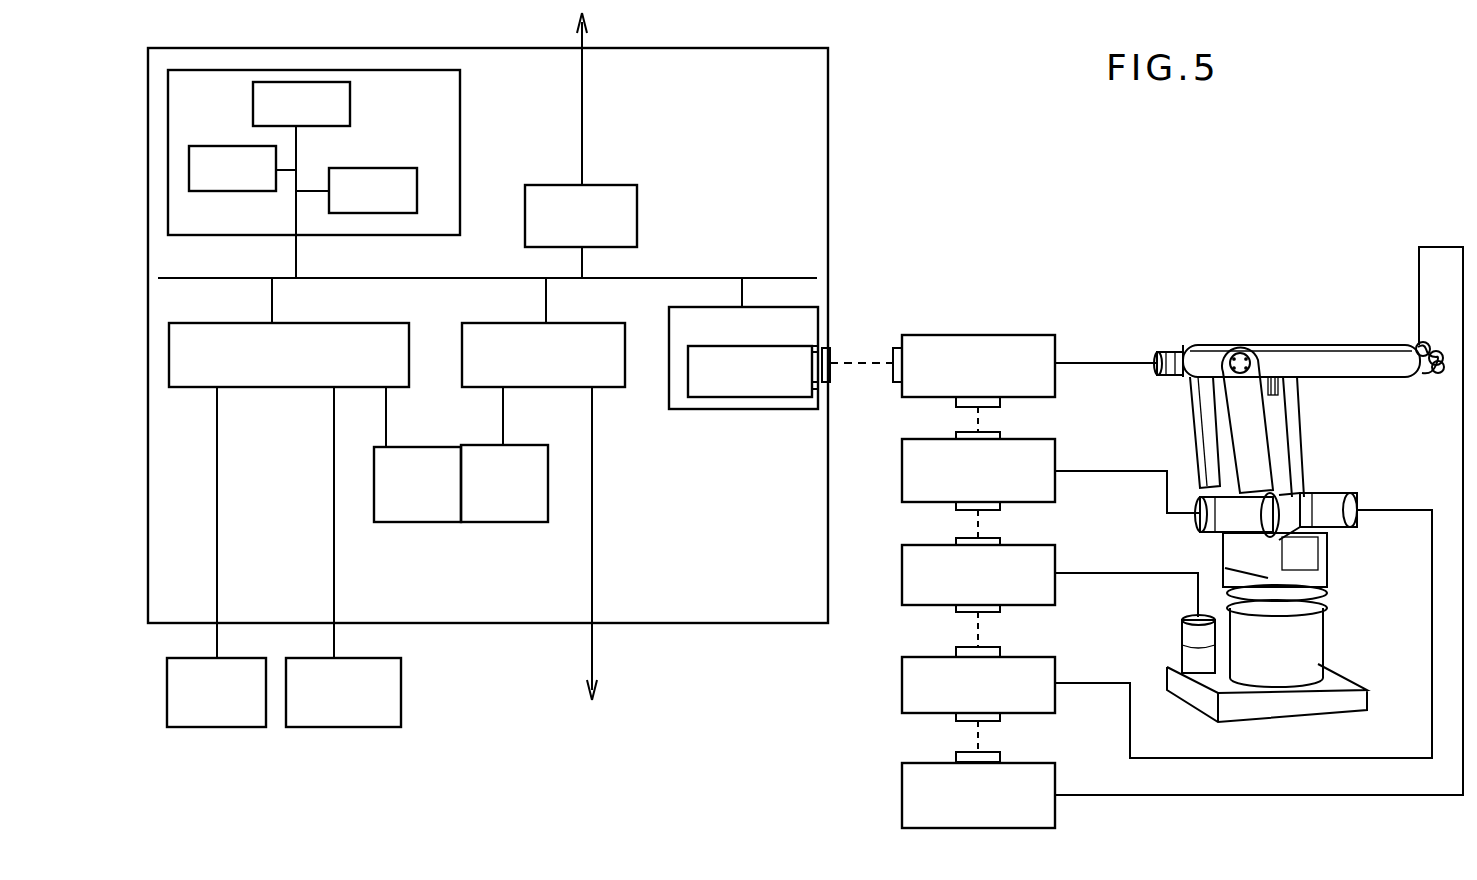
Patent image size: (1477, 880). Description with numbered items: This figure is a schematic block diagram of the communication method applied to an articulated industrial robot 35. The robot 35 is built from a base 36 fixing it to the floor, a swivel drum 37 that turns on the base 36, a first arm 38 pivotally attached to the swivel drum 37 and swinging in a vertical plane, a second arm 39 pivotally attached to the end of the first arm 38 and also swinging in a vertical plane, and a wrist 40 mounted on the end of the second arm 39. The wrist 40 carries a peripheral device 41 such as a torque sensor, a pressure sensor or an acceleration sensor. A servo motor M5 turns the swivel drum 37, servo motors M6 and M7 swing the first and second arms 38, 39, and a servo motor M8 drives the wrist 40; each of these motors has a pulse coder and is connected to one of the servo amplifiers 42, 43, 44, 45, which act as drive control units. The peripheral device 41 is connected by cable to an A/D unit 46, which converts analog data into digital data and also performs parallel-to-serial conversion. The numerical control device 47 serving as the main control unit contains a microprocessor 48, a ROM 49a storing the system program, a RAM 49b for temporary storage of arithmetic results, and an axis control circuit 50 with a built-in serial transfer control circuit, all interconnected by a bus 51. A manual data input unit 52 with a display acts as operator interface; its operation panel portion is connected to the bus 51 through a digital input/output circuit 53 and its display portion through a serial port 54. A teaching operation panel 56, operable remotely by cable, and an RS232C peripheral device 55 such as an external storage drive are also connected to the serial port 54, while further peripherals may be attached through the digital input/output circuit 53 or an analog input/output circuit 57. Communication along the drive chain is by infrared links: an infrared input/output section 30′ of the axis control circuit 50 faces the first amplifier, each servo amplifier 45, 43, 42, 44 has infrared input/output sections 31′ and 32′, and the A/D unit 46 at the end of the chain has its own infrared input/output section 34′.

The numerical control device 47 is at (778, 48).
The microprocessor 48 is at (350, 106).
The ROM 49a is at (226, 191).
The RAM 49b is at (396, 168).
The analog input/output circuit 57 is at (604, 185).
The serial port 54 is at (372, 323).
The digital input/output circuit 53 is at (577, 323).
The manual data input unit with display 52 is at (532, 522).
The bus 51 is at (688, 278).
The axis control circuit 50 is at (708, 409).
The teaching operation panel 56 is at (226, 727).
The peripheral device 55 is at (343, 727).
The infrared input/output section 30′ is at (830, 350).
The infrared input/output section 31′ is at (894, 386).
The infrared input/output section 32′ is at (1000, 401).
The infrared input/output section 34′ is at (956, 754).
The servo amplifier 45 is at (1012, 335).
The servo amplifier 43 is at (1056, 460).
The servo amplifier 42 is at (1058, 565).
The servo amplifier 44 is at (1054, 674).
The A/D unit 46 is at (1056, 784).
The industrial robot 35 is at (1220, 268).
The base 36 is at (1330, 670).
The swivel drum 37 is at (1325, 584).
The first arm 38 is at (1286, 439).
The second arm 39 is at (1342, 360).
The wrist 40 is at (1436, 346).
The peripheral device 41 is at (1416, 343).
The servo motor M5 is at (1188, 637).
The servo motor M6 is at (1240, 531).
The servo motor M7 is at (1343, 497).
The servo motor M8 is at (1157, 353).